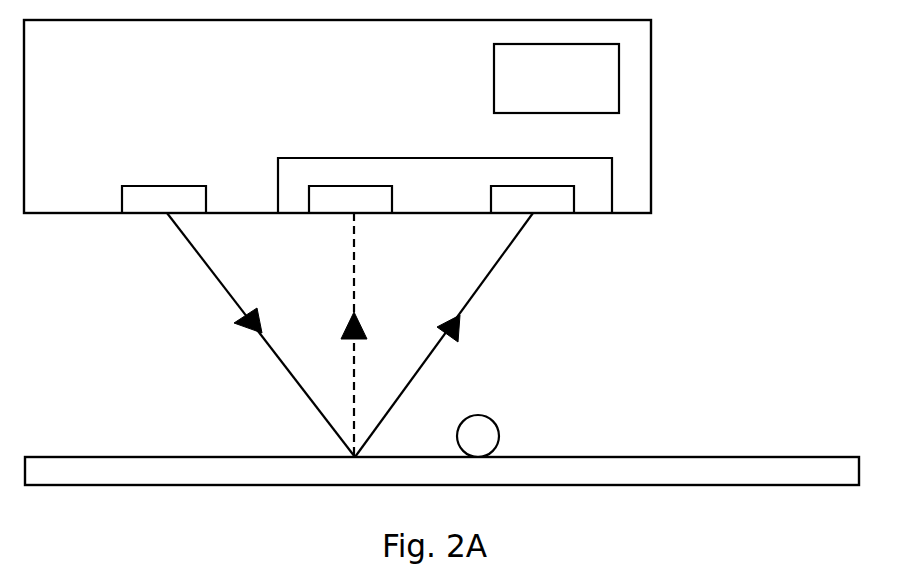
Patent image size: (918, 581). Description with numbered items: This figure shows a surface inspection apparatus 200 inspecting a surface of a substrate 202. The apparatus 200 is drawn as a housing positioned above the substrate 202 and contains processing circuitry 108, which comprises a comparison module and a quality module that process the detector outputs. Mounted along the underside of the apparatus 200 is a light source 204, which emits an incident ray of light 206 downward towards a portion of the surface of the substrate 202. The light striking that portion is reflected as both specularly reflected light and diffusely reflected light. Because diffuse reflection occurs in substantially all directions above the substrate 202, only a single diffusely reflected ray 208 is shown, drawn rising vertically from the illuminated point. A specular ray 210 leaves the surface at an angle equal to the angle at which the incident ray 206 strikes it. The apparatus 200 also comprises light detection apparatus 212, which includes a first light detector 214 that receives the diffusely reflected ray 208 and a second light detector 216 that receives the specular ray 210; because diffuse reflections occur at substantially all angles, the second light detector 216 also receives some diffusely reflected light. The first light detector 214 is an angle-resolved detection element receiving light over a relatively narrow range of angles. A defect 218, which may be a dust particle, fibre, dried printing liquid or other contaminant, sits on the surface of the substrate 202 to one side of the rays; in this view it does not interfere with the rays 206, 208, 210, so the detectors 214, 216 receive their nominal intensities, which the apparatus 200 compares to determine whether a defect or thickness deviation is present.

The surface inspection apparatus 200 is at (152, 104).
The processing circuitry 108 is at (577, 91).
The light detection apparatus 212 is at (602, 180).
The light source 204 is at (142, 200).
The first light detector 214 is at (368, 200).
The second light detector 216 is at (558, 200).
The incident ray of light 206 is at (307, 398).
The diffusely reflected ray 208 is at (352, 310).
The specular ray 210 is at (423, 367).
The defect 218 is at (500, 427).
The substrate 202 is at (720, 457).